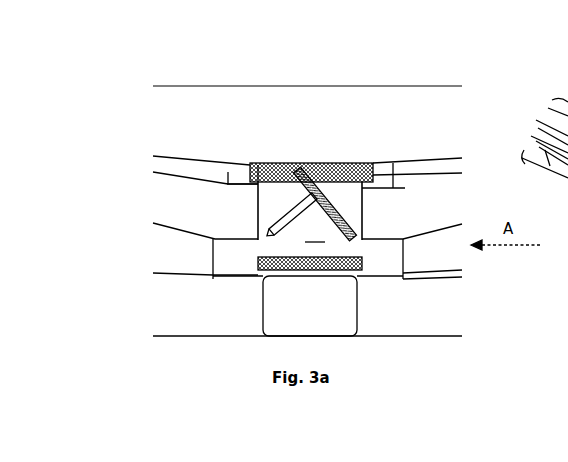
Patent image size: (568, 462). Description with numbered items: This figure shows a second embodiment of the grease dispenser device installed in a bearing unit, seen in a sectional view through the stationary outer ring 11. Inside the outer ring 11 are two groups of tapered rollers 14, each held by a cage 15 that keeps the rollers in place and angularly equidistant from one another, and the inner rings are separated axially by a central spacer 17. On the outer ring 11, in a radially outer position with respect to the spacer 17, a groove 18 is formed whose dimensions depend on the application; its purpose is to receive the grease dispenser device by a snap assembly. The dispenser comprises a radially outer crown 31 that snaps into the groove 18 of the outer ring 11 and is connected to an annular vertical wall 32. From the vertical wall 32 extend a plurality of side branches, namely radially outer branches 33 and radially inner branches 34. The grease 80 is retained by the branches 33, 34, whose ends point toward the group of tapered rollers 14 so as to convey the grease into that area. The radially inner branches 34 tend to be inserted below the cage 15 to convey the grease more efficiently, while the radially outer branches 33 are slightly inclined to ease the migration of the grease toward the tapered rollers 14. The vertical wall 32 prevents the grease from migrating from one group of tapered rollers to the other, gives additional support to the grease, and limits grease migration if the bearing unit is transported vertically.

The outer ring 11 is at (258, 100).
The group of tapered rollers 14 is at (139, 217).
The cage 15 is at (405, 203).
The spacer 17 is at (328, 307).
The groove 18 is at (308, 159).
The radially outer crown 31 is at (268, 170).
The vertical wall 32 is at (315, 243).
The radially outer side branches 33 is at (335, 217).
The radially inner side branches 34 is at (293, 255).
The grease 80 is at (350, 243).